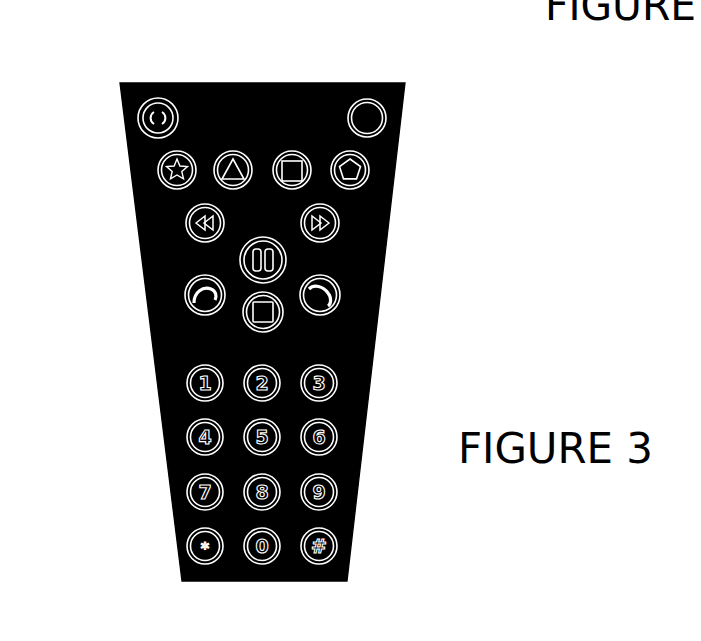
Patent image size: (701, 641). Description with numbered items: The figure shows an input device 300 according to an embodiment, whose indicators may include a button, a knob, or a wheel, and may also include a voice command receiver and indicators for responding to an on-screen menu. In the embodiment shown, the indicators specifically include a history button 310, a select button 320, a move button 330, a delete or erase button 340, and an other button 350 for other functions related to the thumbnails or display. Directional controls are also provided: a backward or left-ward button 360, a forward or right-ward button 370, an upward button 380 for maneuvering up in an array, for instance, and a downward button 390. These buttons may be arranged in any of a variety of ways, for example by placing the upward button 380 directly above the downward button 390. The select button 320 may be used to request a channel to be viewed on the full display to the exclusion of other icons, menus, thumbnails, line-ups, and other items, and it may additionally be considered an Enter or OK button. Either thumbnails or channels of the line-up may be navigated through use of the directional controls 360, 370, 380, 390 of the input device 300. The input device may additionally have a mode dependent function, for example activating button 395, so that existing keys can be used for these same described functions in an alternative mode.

The input device 300 is at (84, 158).
The history button 310 is at (257, 233).
The select button 320 is at (171, 146).
The move button 330 is at (245, 143).
The delete button 340 is at (302, 148).
The other button 350 is at (375, 178).
The backward button 360 is at (190, 201).
The forward button 370 is at (326, 246).
The upward button 380 is at (181, 277).
The downward button 390 is at (325, 322).
The mode dependent function button 395 is at (260, 338).